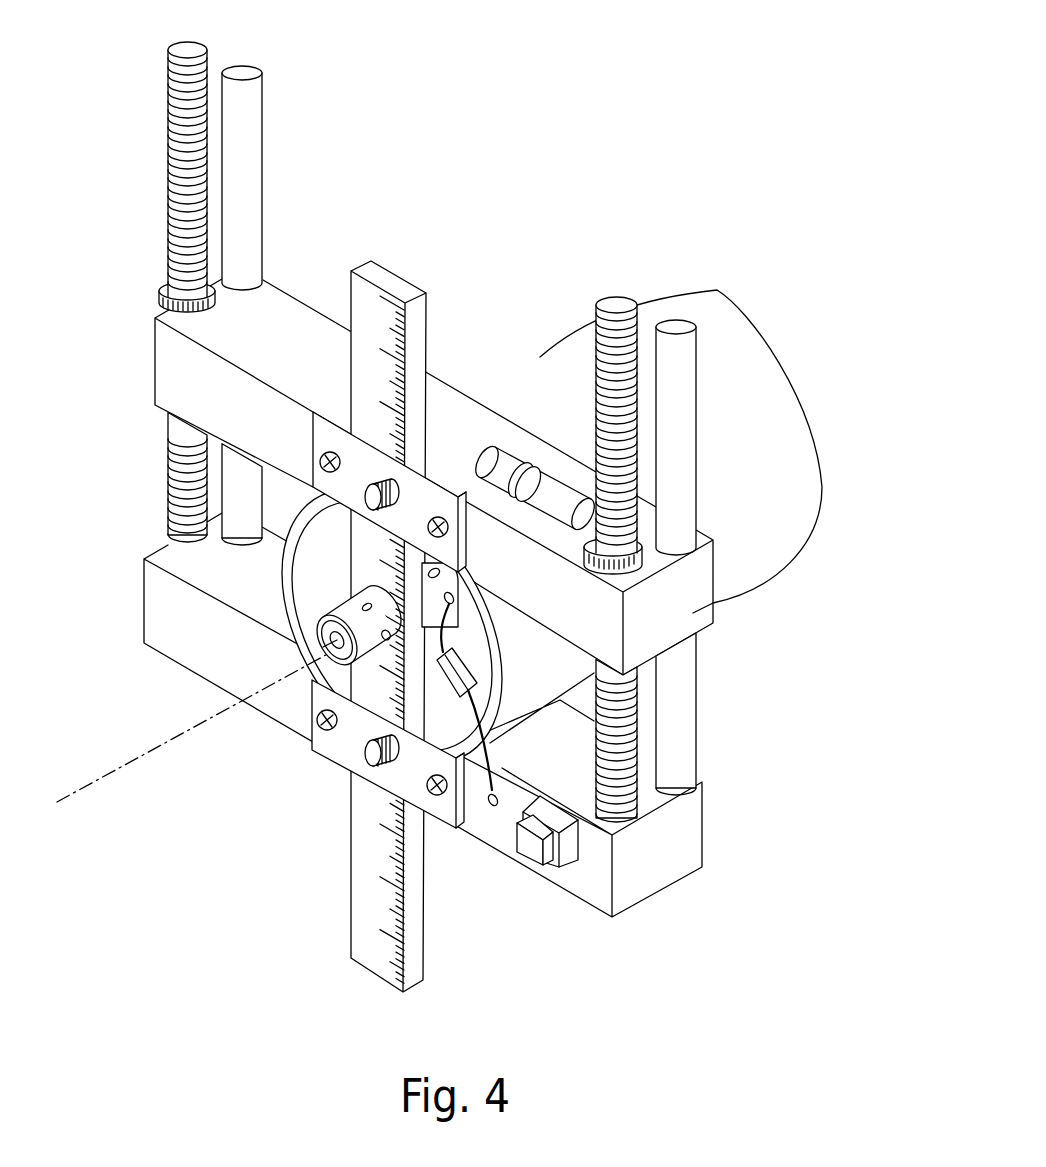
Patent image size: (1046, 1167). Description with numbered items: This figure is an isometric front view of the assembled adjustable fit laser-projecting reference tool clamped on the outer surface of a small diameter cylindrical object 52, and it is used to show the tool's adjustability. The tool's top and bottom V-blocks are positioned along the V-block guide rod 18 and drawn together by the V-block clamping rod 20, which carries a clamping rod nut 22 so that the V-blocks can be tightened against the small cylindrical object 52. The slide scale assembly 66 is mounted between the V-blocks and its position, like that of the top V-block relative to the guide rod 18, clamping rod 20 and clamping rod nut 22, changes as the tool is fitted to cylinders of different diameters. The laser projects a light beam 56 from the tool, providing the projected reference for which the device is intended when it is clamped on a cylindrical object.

The V-block guide rod 18 is at (243, 150).
The V-block clamping rod 20 is at (190, 47).
The clamping rod nut 22 is at (160, 292).
The small cylindrical object 52 is at (750, 552).
The light beam 56 is at (117, 770).
The slide scale assembly 66 is at (402, 278).